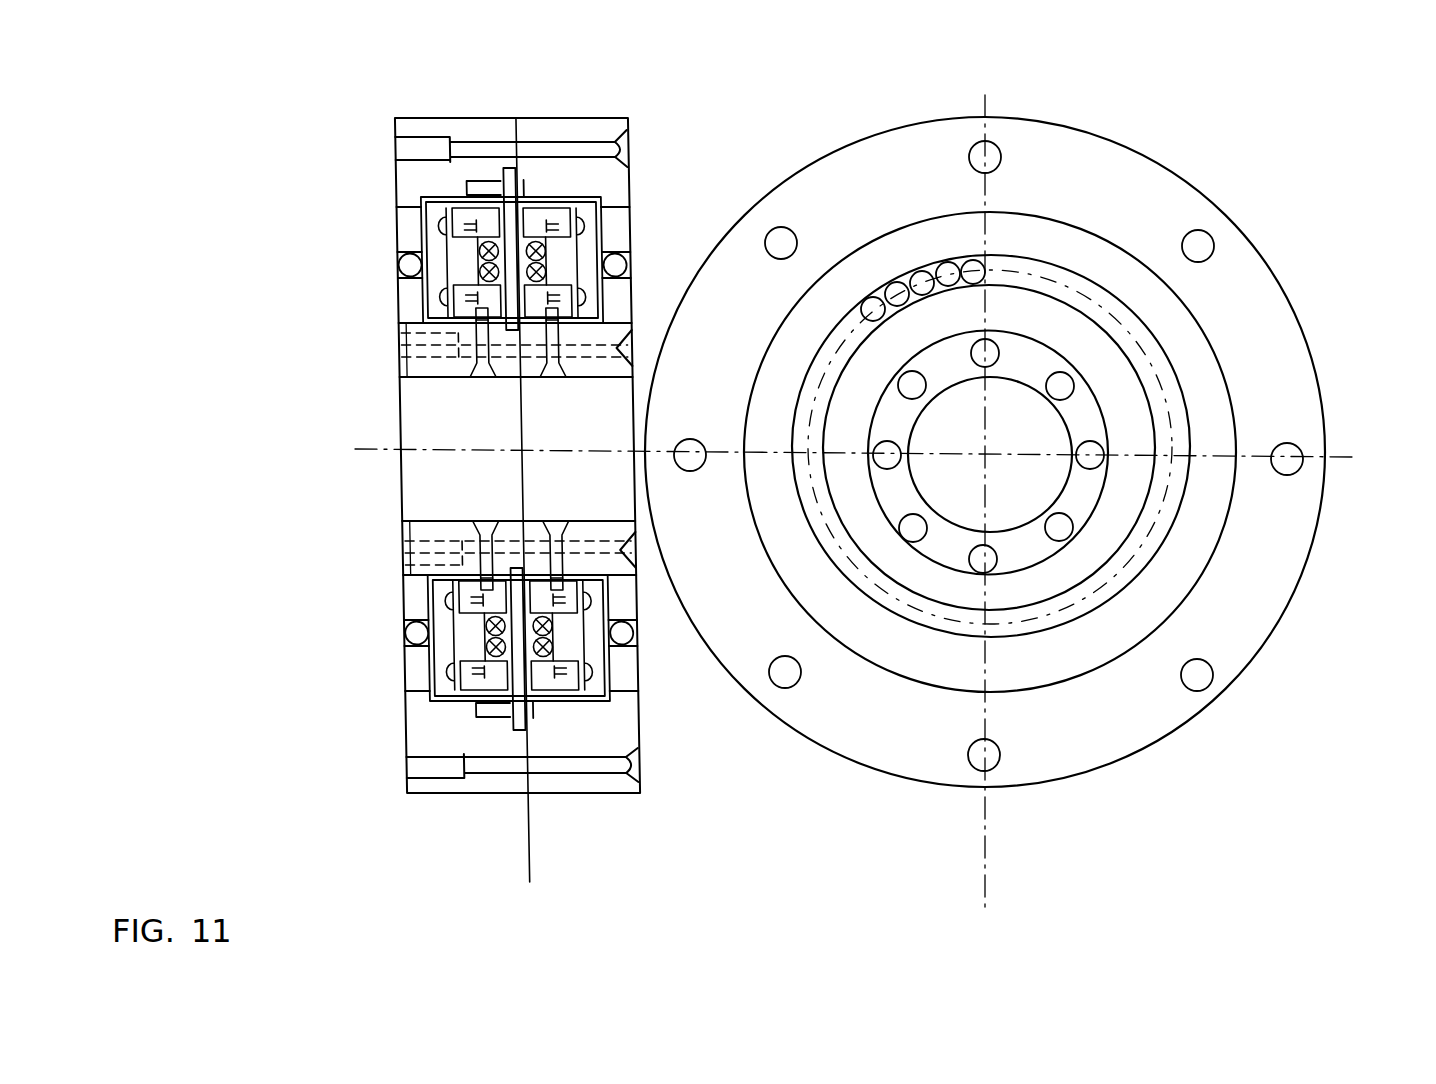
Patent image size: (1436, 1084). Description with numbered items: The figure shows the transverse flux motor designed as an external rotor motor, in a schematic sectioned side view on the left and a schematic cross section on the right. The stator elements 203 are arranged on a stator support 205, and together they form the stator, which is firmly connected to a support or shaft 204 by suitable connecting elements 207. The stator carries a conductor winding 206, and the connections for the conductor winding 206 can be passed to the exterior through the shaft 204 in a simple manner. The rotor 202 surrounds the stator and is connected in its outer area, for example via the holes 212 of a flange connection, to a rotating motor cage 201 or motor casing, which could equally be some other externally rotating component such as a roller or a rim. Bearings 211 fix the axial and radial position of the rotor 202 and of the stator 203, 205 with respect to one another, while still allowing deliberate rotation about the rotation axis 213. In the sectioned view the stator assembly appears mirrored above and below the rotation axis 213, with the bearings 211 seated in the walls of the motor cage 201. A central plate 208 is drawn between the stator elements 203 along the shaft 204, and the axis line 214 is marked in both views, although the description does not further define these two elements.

The motor cage 201 is at (488, 130).
The rotor 202 is at (463, 195).
The stator elements 203 is at (460, 253).
The shaft 204 is at (418, 497).
The stator support 205 is at (442, 562).
The conductor winding 206 is at (473, 272).
The connecting elements 207 is at (568, 521).
The hub plate 208 is at (514, 178).
The bearings 211 is at (403, 261).
The holes 212 is at (1003, 148).
The rotation axis 213 is at (895, 462).
The rotation axis 214 is at (536, 848).